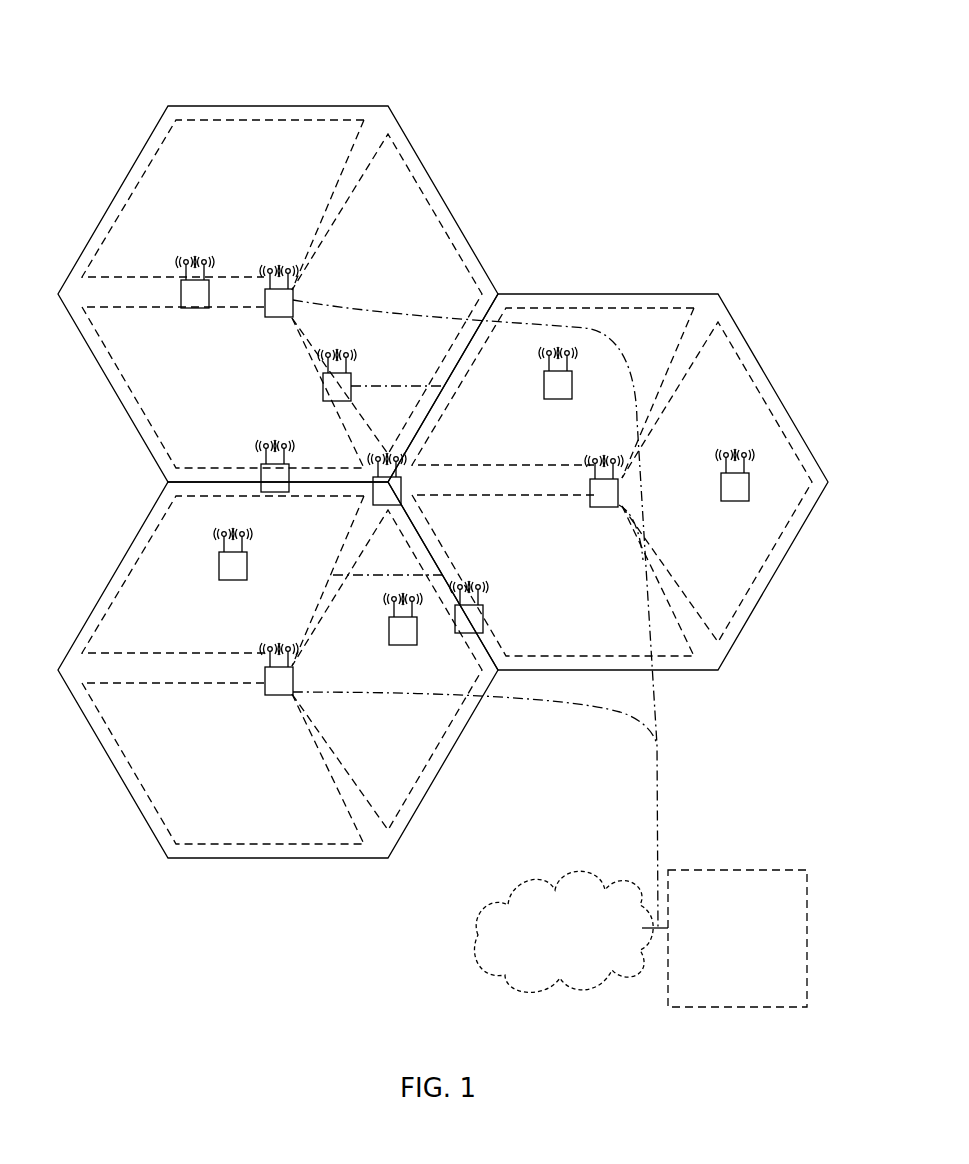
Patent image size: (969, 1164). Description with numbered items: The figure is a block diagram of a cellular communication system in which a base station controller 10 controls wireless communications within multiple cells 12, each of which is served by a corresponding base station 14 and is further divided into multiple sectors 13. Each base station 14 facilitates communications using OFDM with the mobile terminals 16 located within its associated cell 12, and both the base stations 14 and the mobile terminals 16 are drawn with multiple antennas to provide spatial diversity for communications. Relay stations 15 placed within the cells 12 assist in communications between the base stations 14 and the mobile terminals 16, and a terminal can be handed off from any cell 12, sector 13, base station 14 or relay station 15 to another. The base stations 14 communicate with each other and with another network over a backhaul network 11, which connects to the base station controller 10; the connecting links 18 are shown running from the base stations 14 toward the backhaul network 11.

The base station controller 10 is at (726, 964).
The backhaul network 11 is at (548, 957).
The cell 12 is at (280, 106).
The sector 13 is at (184, 150).
The base station 14 is at (265, 316).
The relay station 15 is at (323, 398).
The mobile terminal 16 is at (181, 308).
The communication link 18 is at (394, 386).